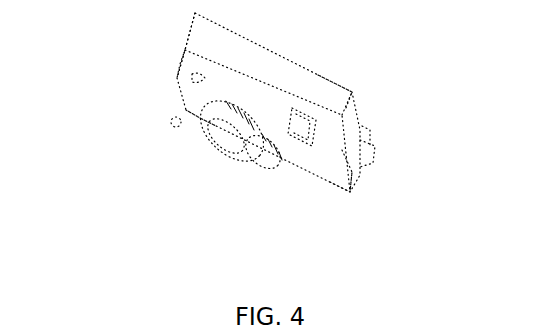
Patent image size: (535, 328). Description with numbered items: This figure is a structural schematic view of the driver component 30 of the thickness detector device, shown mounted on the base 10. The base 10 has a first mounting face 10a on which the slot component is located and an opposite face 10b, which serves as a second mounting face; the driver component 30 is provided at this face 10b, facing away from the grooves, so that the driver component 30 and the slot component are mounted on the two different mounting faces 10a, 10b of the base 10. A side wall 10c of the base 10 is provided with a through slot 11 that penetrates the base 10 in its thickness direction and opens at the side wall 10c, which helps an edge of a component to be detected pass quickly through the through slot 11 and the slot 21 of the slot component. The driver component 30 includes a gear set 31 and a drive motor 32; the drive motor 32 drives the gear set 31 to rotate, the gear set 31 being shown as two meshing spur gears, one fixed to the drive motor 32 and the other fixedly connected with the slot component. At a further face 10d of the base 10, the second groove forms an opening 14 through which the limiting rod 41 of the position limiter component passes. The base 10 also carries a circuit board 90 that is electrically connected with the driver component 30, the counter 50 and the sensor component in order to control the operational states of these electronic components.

The base 10 is at (284, 67).
The first mounting face 10a is at (340, 86).
The face opposite to the first mounting face 10b is at (193, 121).
The side wall 10c is at (192, 55).
The face of the base 10d is at (345, 186).
The through slot 11 is at (177, 72).
The opening 14 is at (353, 163).
The slot 21 is at (201, 83).
The driver component 30 is at (246, 186).
The gear set 31 is at (271, 165).
The drive motor 32 is at (247, 184).
The limiting rod 41 is at (355, 153).
The counter 50 is at (168, 123).
The circuit board 90 is at (325, 134).